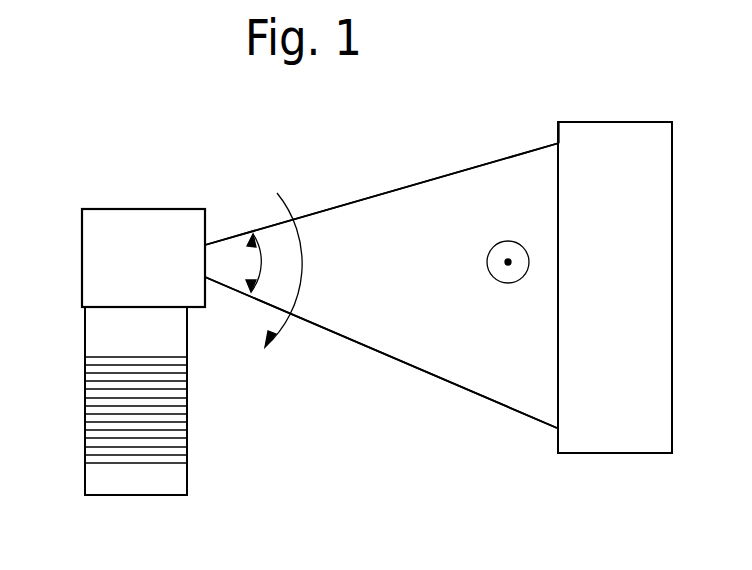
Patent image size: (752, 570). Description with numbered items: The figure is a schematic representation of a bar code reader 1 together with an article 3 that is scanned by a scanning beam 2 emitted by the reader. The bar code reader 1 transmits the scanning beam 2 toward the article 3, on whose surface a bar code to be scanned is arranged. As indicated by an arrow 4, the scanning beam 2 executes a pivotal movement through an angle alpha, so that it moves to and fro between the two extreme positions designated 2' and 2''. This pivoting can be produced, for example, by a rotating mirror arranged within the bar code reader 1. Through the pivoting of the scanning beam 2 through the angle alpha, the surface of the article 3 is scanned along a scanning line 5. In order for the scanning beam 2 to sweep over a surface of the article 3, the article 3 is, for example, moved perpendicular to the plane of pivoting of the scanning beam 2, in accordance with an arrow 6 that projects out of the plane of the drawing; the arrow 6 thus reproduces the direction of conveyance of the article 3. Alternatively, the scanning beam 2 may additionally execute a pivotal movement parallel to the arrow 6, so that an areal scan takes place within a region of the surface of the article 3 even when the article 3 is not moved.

The bar code reader 1 is at (82, 242).
The scanning beam 2 is at (382, 283).
The first end position of scanning beam 2' is at (382, 178).
The second end position of scanning beam 2'' is at (381, 352).
The article 3 is at (655, 163).
The arrow 4 is at (298, 250).
The scanning line 5 is at (558, 165).
The arrow 6 is at (498, 276).
The angle alpha is at (253, 264).